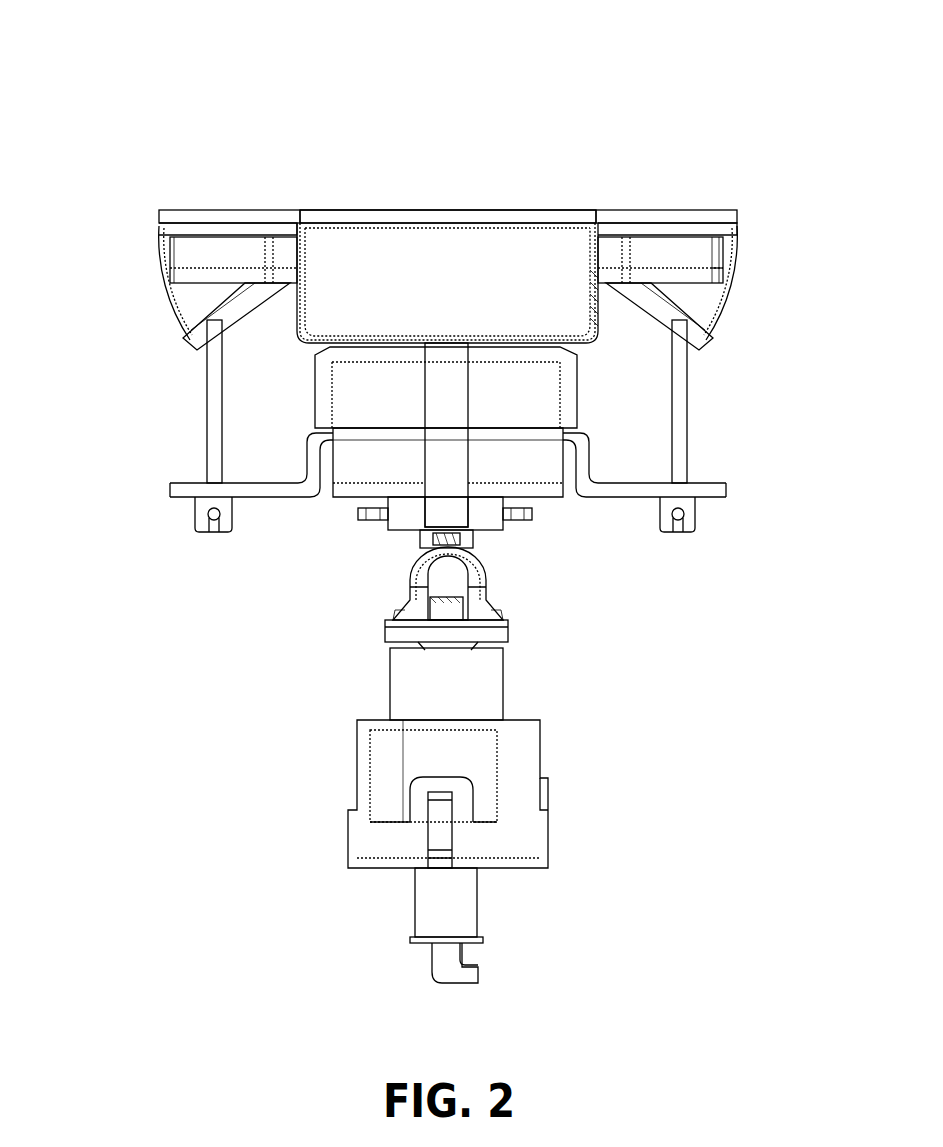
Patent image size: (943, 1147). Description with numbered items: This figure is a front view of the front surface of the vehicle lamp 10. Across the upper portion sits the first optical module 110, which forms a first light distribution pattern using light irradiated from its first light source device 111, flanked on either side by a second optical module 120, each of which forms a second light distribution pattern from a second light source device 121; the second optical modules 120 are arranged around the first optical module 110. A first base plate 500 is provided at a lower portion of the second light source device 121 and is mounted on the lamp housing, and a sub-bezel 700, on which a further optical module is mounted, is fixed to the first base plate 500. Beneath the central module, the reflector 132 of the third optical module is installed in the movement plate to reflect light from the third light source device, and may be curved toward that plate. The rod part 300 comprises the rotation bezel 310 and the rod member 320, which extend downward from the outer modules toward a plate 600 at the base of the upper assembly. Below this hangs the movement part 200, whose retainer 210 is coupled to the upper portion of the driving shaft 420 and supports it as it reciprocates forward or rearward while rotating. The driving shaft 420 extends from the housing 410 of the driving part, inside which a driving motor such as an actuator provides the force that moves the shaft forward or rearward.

The vehicle lamp 10 is at (105, 71).
The first optical module 110 is at (472, 76).
The first light source device 111 is at (445, 218).
The second optical module 120 is at (448, 144).
The second light source device 121 is at (240, 218).
The reflector 132 is at (347, 400).
The movement part 200 is at (493, 740).
The retainer 210 is at (482, 598).
The rod part 300 is at (65, 318).
The rotation bezel 310 is at (170, 300).
The rod member 320 is at (210, 386).
The housing 410 is at (527, 752).
The driving shaft 420 is at (433, 578).
The first base plate 500 is at (722, 275).
The base plate 600 is at (718, 492).
The sub-bezel 700 is at (190, 255).